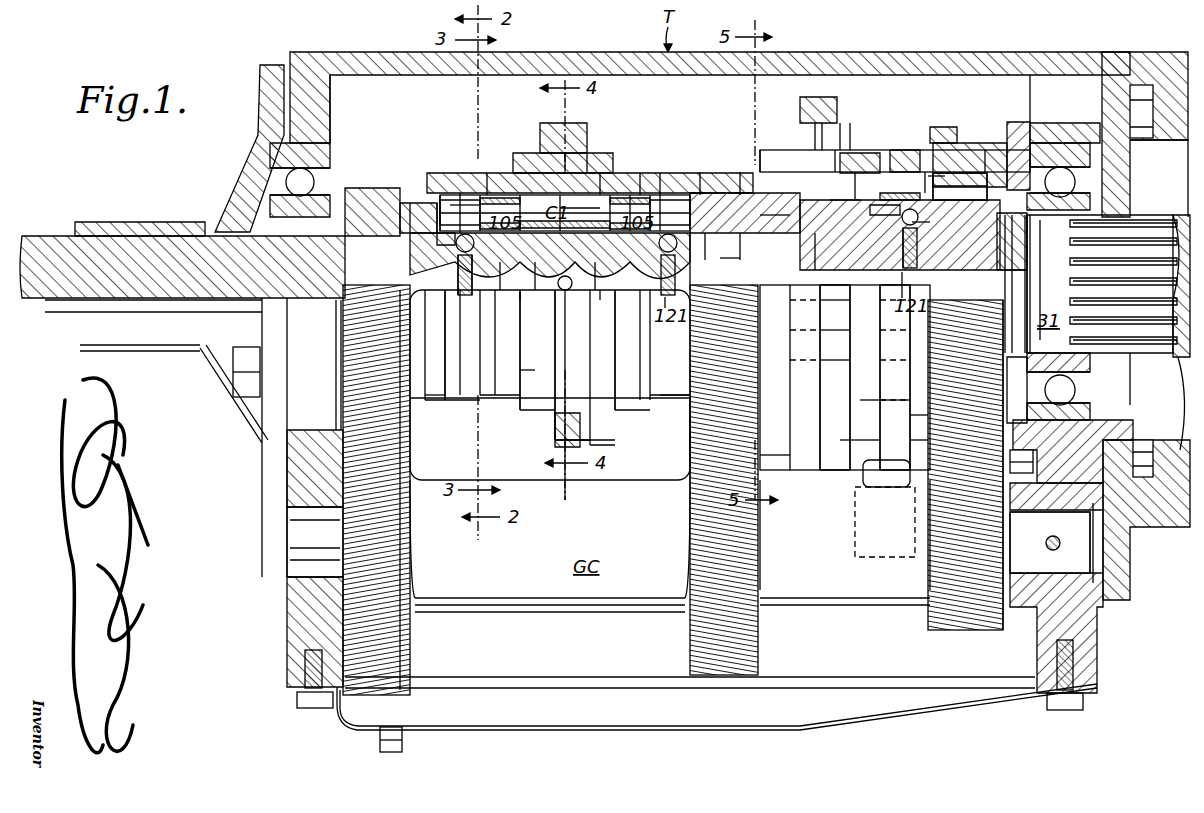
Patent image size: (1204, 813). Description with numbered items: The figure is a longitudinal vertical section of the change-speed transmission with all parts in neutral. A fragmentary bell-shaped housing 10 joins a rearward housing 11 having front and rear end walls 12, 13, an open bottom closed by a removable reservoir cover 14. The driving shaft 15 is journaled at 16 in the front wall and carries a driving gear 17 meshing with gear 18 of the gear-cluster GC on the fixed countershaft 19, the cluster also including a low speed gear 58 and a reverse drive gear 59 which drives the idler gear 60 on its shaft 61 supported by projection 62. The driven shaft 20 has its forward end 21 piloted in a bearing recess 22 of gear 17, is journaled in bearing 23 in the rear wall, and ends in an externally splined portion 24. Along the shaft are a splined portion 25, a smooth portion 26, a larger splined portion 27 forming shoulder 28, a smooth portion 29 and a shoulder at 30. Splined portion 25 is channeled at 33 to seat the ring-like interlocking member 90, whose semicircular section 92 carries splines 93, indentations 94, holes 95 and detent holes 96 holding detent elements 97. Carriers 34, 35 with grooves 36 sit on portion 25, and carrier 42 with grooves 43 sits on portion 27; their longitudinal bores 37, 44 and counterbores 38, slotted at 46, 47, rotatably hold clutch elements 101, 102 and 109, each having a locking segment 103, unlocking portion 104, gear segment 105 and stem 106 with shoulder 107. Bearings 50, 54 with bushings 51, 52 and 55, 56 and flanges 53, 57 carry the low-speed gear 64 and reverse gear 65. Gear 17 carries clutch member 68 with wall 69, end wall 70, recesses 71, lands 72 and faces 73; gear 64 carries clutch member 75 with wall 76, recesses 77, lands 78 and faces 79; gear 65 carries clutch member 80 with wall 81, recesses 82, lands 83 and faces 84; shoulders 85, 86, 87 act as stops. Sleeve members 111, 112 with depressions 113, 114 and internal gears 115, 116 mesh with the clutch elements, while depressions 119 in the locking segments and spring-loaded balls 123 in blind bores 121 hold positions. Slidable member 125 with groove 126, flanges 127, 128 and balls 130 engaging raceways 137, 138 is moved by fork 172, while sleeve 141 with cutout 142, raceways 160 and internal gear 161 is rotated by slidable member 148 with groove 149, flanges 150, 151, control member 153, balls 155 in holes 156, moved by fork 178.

The bell-shaped housing 10 is at (200, 224).
The transmission housing 11 is at (1000, 64).
The front end wall 12 is at (295, 623).
The rear end wall 13 is at (1082, 640).
The removable cover 14 is at (892, 716).
The driving shaft 15 is at (45, 248).
The journal 16 is at (275, 180).
The driving gear 17 is at (345, 366).
The gear 18 is at (400, 645).
The countershaft 19 is at (290, 556).
The driven shaft 20 is at (1182, 345).
The forward end of driven shaft 21 is at (318, 302).
The bearing recess 22 is at (303, 300).
The bearing 23 is at (1068, 183).
The externally splined portion 24 is at (1150, 252).
The splined surface portion 25 is at (385, 195).
The smooth surface portion 26 is at (686, 190).
The splined surface portion 27 is at (975, 160).
The external annular shoulder 28 is at (742, 224).
The smooth surface portion 29 is at (1012, 220).
The external annular shoulder 30 is at (1028, 280).
The annular channel 33 is at (573, 280).
The carrier 34 is at (508, 188).
The carrier 35 is at (650, 185).
The grooves 36 is at (600, 268).
The longitudinal bores 37 is at (512, 272).
The counterbores 38 is at (465, 190).
The carrier 42 is at (857, 170).
The grooves 43 is at (838, 322).
The longitudinal bores 44 is at (762, 215).
The inner slot 46 is at (895, 228).
The outer slot 47 is at (835, 194).
The ring-like bearing 50 is at (692, 183).
The internal bushing 51 is at (702, 175).
The external bushing 52 is at (736, 183).
The circular flange 53 is at (742, 175).
The ring-like bearing 54 is at (987, 148).
The internal bushing 55 is at (1008, 245).
The external bushing 56 is at (945, 127).
The circular flange 57 is at (1015, 140).
The low speed gear 58 is at (700, 640).
The reverse drive gear 59 is at (955, 622).
The idler gear 60 is at (926, 440).
The idler shaft 61 is at (862, 472).
The projection 62 is at (862, 629).
The low-speed gear 64 is at (692, 432).
The reverse drive gear 65 is at (926, 414).
The cup-shaped clutch member 68 is at (450, 402).
The cylindrical wall 69 is at (466, 400).
The end wall 70 is at (418, 190).
The arcuate recesses 71 is at (440, 190).
The lands 72 is at (412, 205).
The arcuate faces 73 is at (452, 180).
The clutch member 75 is at (662, 412).
The cylindrical wall 76 is at (646, 402).
The arcuate recesses 77 is at (661, 172).
The lands 78 is at (696, 226).
The arcuate faces 79 is at (715, 226).
The clutch member 80 is at (882, 436).
The cylindrical wall 81 is at (872, 406).
The arcuate recesses 82 is at (905, 160).
The lands 83 is at (928, 168).
The arcuate faces 84 is at (940, 163).
The annular shoulder 85 is at (436, 398).
The annular shoulder 86 is at (698, 402).
The annular shoulder 87 is at (883, 390).
The interlocking member 90 is at (562, 228).
The semicircular section 92 is at (536, 365).
The splines 93 is at (572, 185).
The indentations 94 is at (566, 302).
The holes 95 is at (580, 212).
The detent holes 96 is at (600, 180).
The detent element 97 is at (548, 152).
The clutch elements 101 is at (464, 212).
The clutch elements 102 is at (669, 212).
The locking segment 103 is at (446, 237).
The arcuate unlocking portion 104 is at (470, 180).
The gear segment 105 is at (888, 150).
The stem 106 is at (818, 238).
The annular shoulder 107 is at (838, 148).
The clutch elements 109 is at (882, 210).
The sleeve member 111 is at (500, 397).
The sleeve member 112 is at (626, 402).
The depression 113 is at (522, 185).
The depression 114 is at (615, 182).
The internal annular gear segment 115 is at (488, 185).
The internal annular gear segment 116 is at (640, 190).
The depression 119 is at (922, 220).
The blind bores 121 is at (460, 297).
The spring-loaded ball 123 is at (456, 262).
The slidable member 125 is at (528, 370).
The external annular groove 126 is at (575, 472).
The circular flange 127 is at (552, 425).
The circular flange 128 is at (586, 442).
The balls 130 is at (535, 306).
The raceway 137 is at (547, 275).
The raceway 138 is at (604, 290).
The sleeve member 141 is at (880, 316).
The cutout 142 is at (848, 122).
The slidable member 148 is at (722, 252).
The external annular groove 149 is at (820, 122).
The circular flange 150 is at (805, 98).
The circular flange 151 is at (842, 436).
The control member 153 is at (764, 148).
The balls 155 is at (826, 316).
The holes 156 is at (826, 322).
The angular raceways 160 is at (818, 352).
The internal gear segment 161 is at (865, 165).
The shifting fork 172 is at (560, 446).
The shifting fork 178 is at (776, 450).